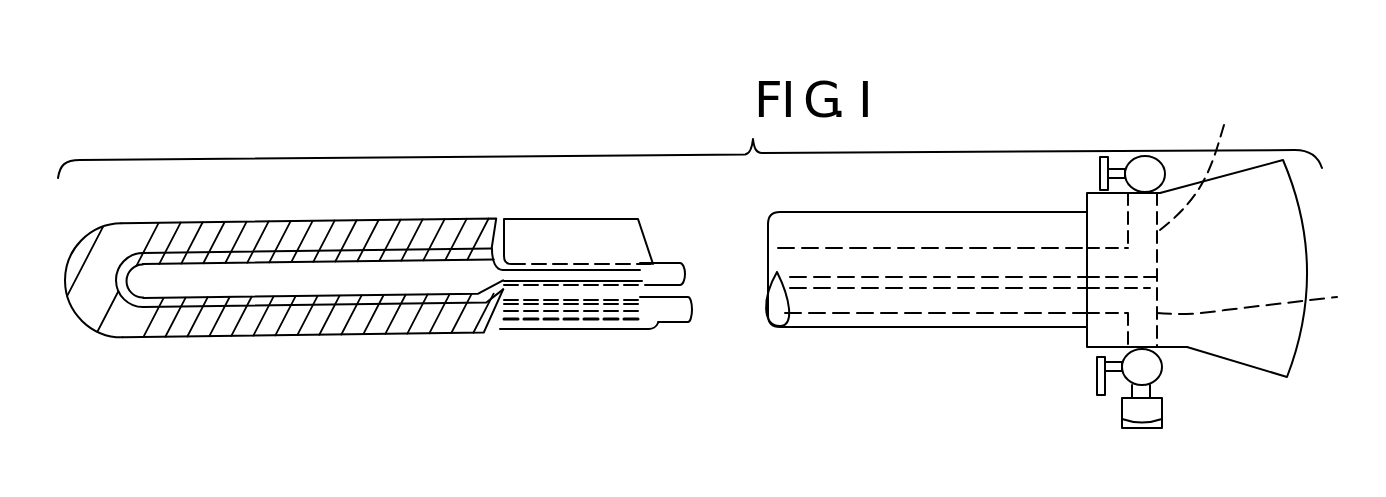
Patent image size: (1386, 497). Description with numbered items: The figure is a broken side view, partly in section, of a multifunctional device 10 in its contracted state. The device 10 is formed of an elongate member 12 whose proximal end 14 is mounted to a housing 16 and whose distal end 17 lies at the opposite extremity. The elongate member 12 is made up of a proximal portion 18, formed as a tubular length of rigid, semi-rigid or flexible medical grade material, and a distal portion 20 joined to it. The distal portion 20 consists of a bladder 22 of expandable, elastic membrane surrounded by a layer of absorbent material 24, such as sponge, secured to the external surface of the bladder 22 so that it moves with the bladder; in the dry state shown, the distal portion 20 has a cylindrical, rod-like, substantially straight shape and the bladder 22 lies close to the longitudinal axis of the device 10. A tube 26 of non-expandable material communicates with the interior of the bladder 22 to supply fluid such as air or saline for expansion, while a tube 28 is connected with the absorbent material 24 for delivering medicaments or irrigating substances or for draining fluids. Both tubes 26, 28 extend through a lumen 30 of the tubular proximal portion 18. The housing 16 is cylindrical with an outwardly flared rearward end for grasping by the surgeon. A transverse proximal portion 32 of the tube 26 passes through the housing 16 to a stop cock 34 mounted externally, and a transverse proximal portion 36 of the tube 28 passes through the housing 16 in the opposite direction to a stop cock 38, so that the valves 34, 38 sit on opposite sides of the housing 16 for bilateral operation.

The multifunctional device 10 is at (887, 183).
The elongate member 12 is at (568, 212).
The proximal end 14 is at (1082, 212).
The housing 16 is at (1298, 198).
The distal end 17 is at (97, 223).
The proximal portion 18 is at (612, 328).
The distal portion 20 is at (167, 337).
The bladder 22 is at (253, 248).
The absorbent material 24 is at (197, 242).
The tube 26 is at (598, 264).
The tube 28 is at (567, 325).
The lumen 30 is at (523, 243).
The transverse proximal portion 32 is at (1206, 160).
The stop cock 34 is at (1132, 158).
The transverse proximal portion 36 is at (1271, 305).
The stop cock 38 is at (1163, 364).